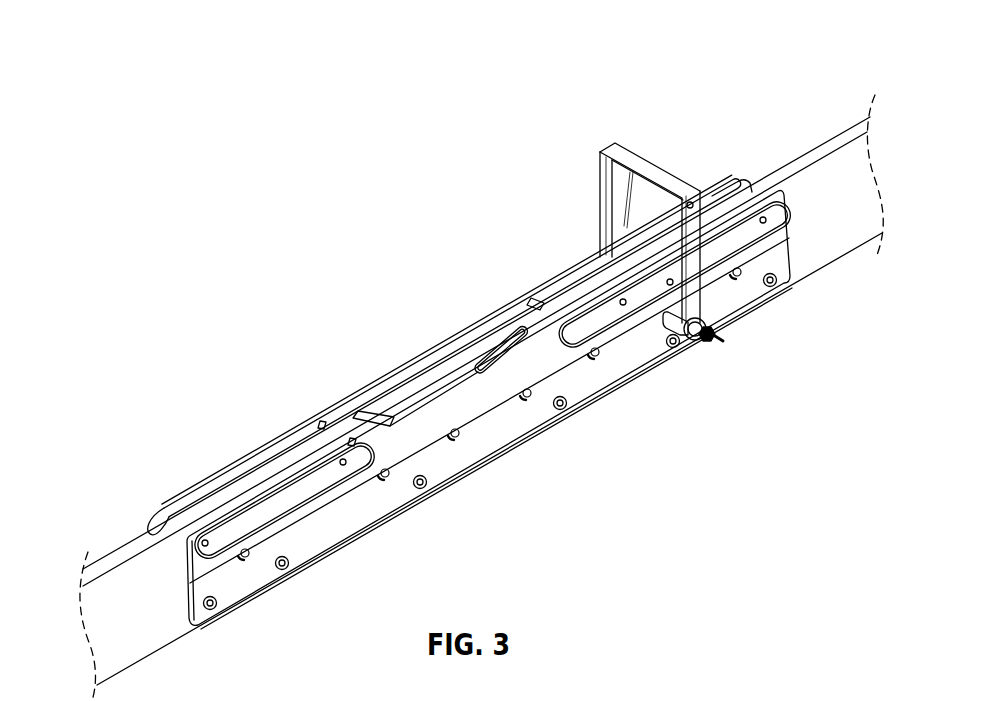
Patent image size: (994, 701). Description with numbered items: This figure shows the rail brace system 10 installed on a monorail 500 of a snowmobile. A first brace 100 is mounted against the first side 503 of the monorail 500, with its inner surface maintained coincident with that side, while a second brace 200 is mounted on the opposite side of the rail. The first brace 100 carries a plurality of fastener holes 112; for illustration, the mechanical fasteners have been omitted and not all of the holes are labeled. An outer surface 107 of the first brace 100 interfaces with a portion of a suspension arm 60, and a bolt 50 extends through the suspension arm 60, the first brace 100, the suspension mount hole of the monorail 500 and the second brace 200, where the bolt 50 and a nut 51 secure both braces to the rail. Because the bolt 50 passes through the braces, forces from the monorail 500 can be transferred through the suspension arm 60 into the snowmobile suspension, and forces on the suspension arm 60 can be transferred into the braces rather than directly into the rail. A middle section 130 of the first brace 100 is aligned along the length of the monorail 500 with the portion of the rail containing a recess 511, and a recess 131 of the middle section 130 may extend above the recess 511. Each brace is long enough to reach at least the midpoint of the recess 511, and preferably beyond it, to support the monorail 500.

The rail brace system 10 is at (134, 51).
The bolt 50 is at (712, 343).
The nut 51 is at (708, 332).
The suspension arm 60 is at (622, 157).
The first brace 100 is at (643, 347).
The outer surface 107 is at (603, 312).
The fastener holes 112 is at (427, 488).
The middle section 130 is at (477, 403).
The recess 131 is at (432, 407).
The second brace 200 is at (310, 423).
The monorail 500 is at (810, 250).
The first side 503 is at (113, 657).
The recess 511 is at (436, 408).